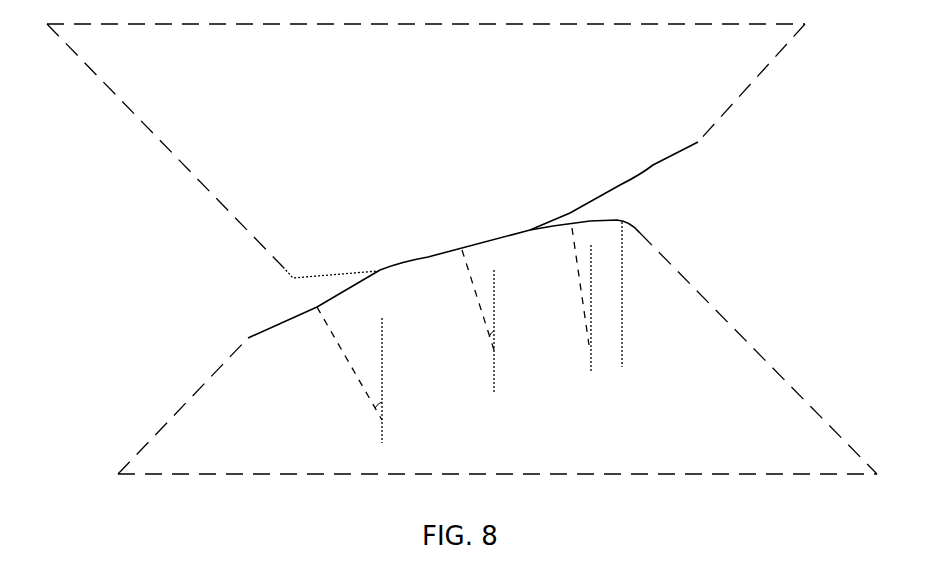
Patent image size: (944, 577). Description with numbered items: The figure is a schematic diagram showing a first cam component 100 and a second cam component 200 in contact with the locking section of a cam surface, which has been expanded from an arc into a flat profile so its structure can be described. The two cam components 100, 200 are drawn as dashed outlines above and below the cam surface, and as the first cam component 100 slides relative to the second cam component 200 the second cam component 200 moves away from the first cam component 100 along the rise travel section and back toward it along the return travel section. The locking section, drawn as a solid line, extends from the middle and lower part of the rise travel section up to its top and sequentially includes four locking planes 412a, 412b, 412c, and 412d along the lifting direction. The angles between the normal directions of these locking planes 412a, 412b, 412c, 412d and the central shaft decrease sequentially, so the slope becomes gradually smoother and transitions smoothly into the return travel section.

The first cam component 100 is at (710, 375).
The second cam component 200 is at (238, 140).
The first locking plane 412a is at (250, 338).
The second locking plane 412b is at (428, 257).
The third locking plane 412c is at (553, 227).
The fourth locking plane 412d is at (619, 222).